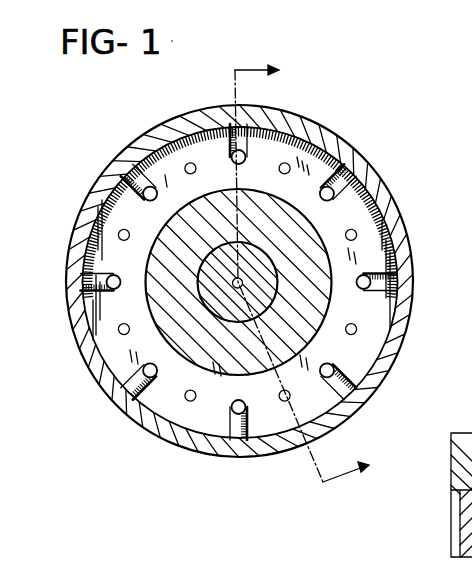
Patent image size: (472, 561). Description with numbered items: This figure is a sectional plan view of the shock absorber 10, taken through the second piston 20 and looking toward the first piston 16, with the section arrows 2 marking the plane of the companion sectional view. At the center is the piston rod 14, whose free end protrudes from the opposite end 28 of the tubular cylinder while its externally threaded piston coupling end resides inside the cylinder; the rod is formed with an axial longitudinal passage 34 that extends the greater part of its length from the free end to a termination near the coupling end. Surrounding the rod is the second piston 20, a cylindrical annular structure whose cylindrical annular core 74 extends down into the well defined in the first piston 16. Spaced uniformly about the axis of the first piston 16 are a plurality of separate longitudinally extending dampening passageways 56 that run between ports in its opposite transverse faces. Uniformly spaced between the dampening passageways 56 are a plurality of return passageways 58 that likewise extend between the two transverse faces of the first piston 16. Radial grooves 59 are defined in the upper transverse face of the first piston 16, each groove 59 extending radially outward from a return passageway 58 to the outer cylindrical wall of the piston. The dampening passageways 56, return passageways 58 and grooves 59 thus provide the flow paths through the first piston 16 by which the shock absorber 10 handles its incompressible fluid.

The shock absorber 10 is at (105, 153).
The piston rod 14 is at (280, 247).
The first piston 16 is at (280, 450).
The second piston 20 is at (210, 184).
The opposite end 28 is at (451, 547).
The axial longitudinal passage 34 is at (236, 285).
The dampening passageways 56 is at (357, 234).
The return passageways 58 is at (338, 193).
The radial grooves 59 is at (321, 187).
The cylindrical annular core 74 is at (287, 203).
The section line 2- 2 is at (310, 270).